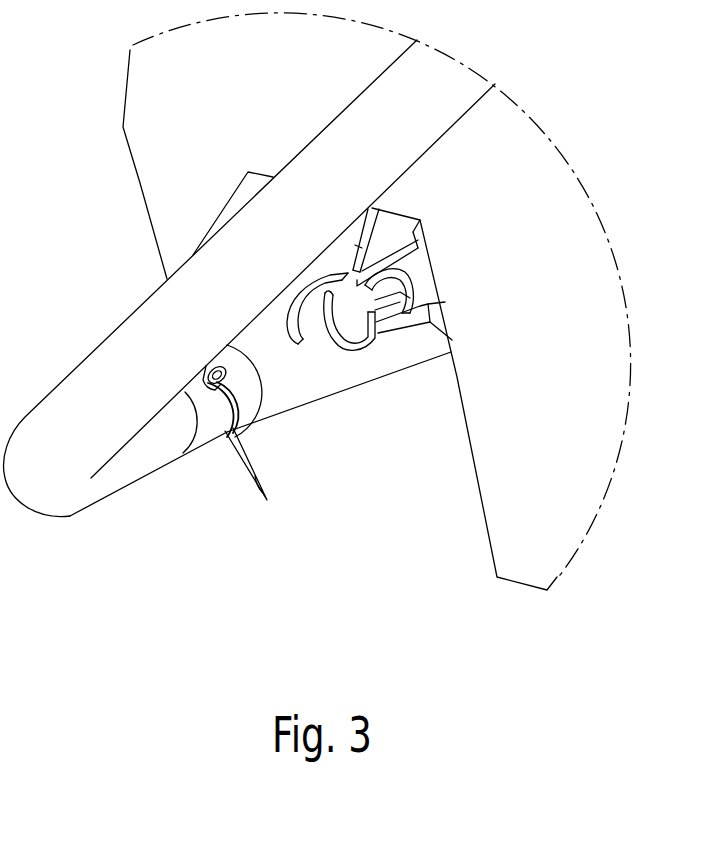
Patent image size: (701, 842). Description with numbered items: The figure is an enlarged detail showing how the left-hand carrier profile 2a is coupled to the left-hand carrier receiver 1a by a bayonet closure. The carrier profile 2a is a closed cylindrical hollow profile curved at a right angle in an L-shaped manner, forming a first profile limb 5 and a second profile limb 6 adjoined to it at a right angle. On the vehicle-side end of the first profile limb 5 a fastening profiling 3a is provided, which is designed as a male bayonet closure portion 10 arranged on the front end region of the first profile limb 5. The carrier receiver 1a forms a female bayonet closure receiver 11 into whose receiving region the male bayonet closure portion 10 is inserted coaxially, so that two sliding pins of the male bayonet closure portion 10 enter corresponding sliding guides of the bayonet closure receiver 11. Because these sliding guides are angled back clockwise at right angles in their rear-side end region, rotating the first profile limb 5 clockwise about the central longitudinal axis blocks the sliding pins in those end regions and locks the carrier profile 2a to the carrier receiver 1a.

The carrier receiver 1a is at (306, 351).
The carrier profile 2a is at (62, 375).
The fastening profiling 3a is at (222, 414).
The first profile limb 5 is at (131, 460).
The second profile limb 6 is at (340, 138).
The male bayonet closure portion 10 is at (224, 366).
The bayonet closure receiver 11 is at (410, 298).